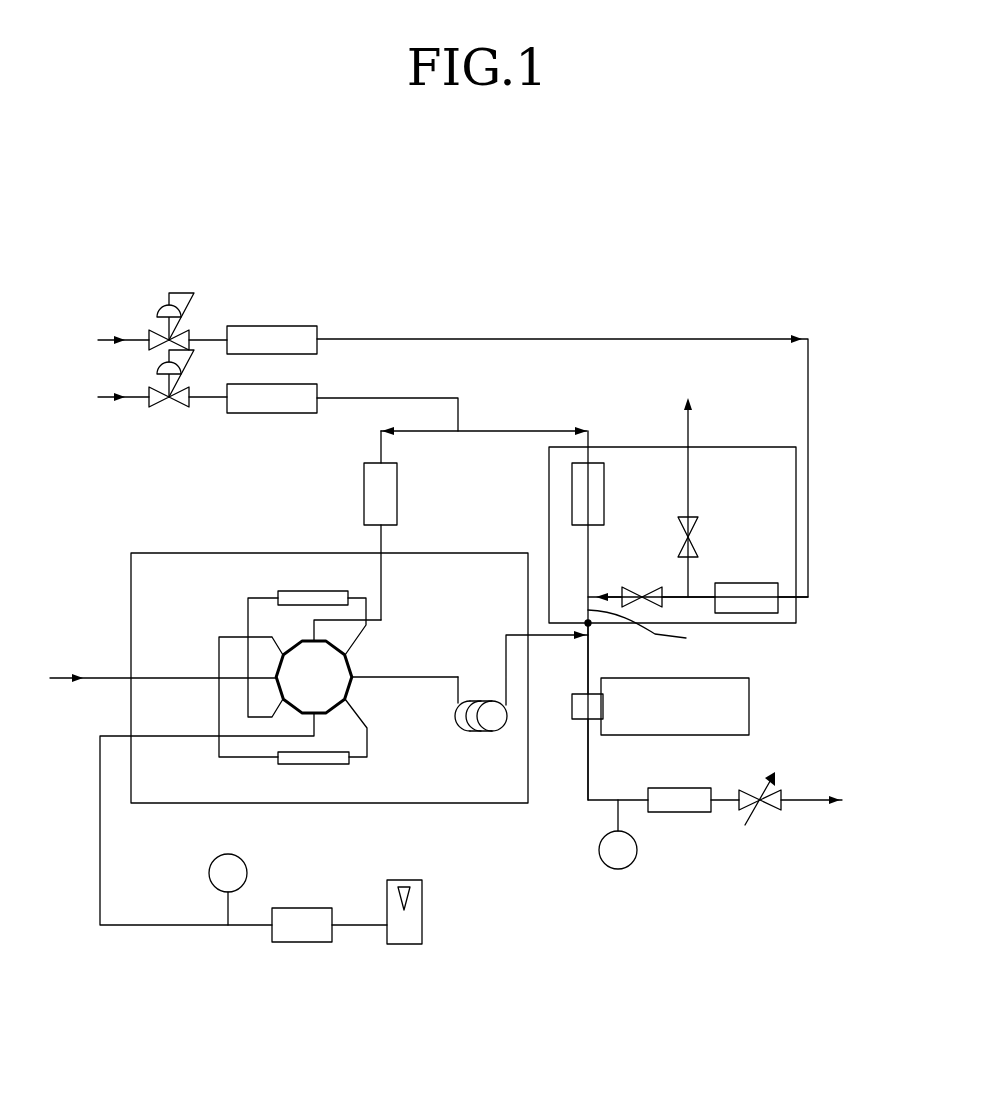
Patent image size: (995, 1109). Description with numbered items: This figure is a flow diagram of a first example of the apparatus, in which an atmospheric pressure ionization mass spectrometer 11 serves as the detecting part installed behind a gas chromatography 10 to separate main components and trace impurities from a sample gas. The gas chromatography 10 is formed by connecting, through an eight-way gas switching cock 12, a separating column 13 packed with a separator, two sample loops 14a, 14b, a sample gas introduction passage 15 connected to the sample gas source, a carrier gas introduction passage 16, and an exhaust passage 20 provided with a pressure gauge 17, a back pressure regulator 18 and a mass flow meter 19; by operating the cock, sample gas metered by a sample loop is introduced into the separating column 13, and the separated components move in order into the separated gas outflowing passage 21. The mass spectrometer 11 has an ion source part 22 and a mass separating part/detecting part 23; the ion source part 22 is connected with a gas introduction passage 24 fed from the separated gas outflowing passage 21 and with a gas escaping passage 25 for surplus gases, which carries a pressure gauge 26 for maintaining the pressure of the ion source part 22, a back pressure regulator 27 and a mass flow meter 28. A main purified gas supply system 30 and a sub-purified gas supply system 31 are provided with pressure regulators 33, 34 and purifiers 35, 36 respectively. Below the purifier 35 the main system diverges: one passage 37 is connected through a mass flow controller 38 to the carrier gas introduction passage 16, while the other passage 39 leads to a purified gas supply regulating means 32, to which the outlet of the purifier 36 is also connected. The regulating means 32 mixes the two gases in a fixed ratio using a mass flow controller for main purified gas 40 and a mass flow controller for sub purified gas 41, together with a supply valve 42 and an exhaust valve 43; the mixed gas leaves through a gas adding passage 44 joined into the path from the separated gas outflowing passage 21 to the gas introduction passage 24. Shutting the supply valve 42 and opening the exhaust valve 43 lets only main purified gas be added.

The gas chromatography 10 is at (329, 629).
The atmospheric pressure ionization mass spectrometer 11 is at (709, 779).
The 8 way gas switching cock 12 is at (352, 660).
The separating column 13 is at (488, 733).
The sample loop 14a is at (292, 591).
The sample loop 14b is at (325, 764).
The sample gas introduction passage 15 is at (177, 678).
The carrier gas introduction passage 16 is at (382, 575).
The pressure gauge 17 is at (212, 862).
The back pressure regulator 18 is at (310, 908).
The mass flow meter 19 is at (405, 880).
The exhaust passage 20 is at (212, 736).
The separated gas outflowing passage 21 is at (515, 633).
The ion source part 22 is at (575, 720).
The mass separating part/detecting part 23 is at (733, 678).
The gas introduction passage 24 is at (588, 667).
The gas escaping passage 25 is at (590, 781).
The pressure gauge 26 is at (605, 865).
The back pressure regulator 27 is at (680, 812).
The mass flow meter 28 is at (770, 810).
The main purified gas supply system 30 is at (425, 390).
The sub-purified gas supply system 31 is at (650, 315).
The purified gas supply regulating means 32 is at (678, 491).
The pressure regulator 33 is at (160, 406).
The pressure regulator 34 is at (178, 334).
The purifier 35 is at (275, 413).
The purifier 36 is at (300, 326).
The passage 37 is at (433, 440).
The mass flow controller 38 is at (397, 499).
The passage 39 is at (536, 431).
The mass flow controller for main purified gas 40 is at (604, 508).
The mass flow controller for sub purified gas 41 is at (752, 583).
The supply valve 42 is at (628, 589).
The exhaust valve 43 is at (692, 540).
The gas adding passage 44 is at (659, 633).